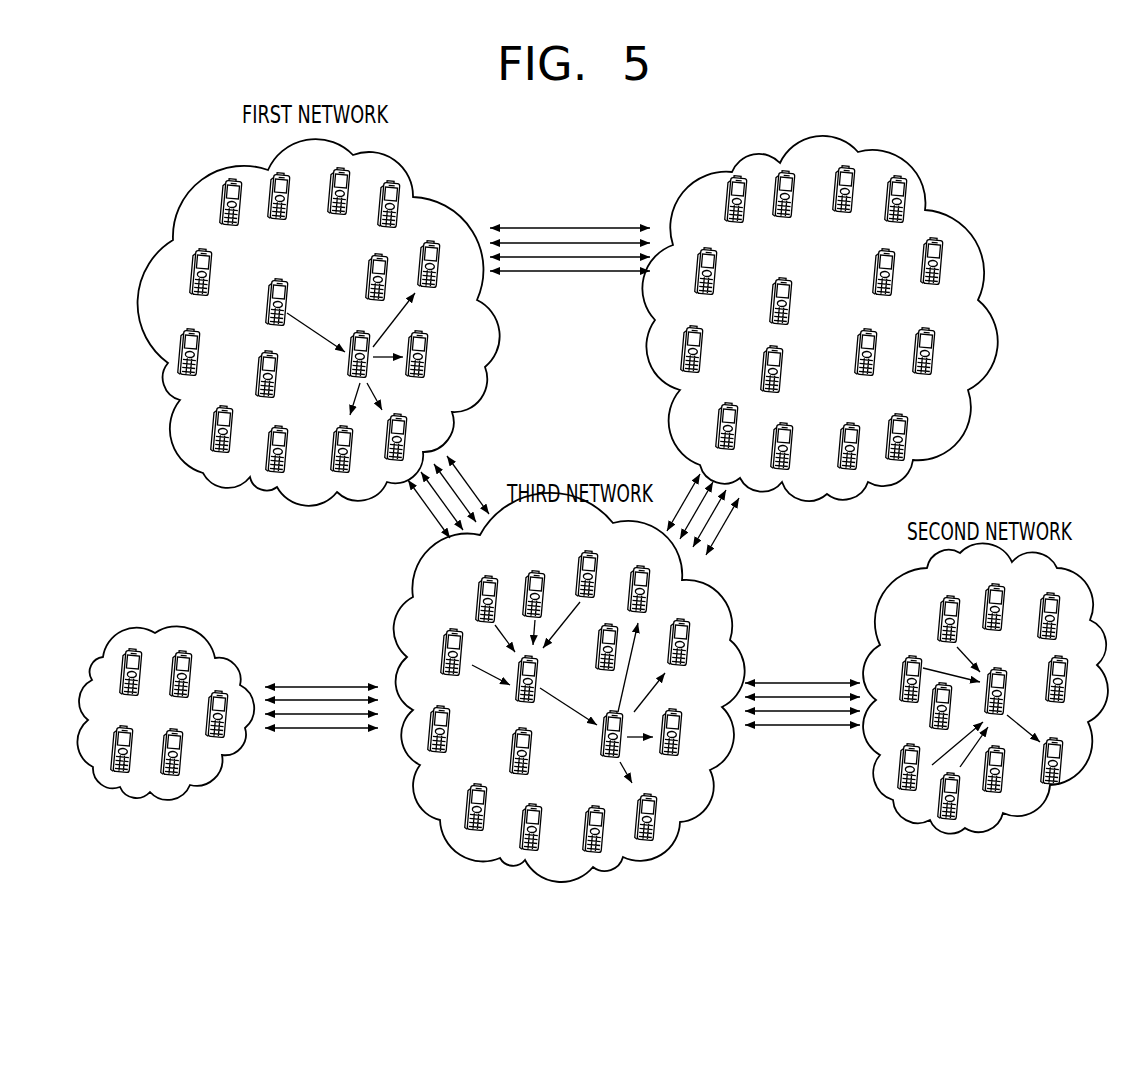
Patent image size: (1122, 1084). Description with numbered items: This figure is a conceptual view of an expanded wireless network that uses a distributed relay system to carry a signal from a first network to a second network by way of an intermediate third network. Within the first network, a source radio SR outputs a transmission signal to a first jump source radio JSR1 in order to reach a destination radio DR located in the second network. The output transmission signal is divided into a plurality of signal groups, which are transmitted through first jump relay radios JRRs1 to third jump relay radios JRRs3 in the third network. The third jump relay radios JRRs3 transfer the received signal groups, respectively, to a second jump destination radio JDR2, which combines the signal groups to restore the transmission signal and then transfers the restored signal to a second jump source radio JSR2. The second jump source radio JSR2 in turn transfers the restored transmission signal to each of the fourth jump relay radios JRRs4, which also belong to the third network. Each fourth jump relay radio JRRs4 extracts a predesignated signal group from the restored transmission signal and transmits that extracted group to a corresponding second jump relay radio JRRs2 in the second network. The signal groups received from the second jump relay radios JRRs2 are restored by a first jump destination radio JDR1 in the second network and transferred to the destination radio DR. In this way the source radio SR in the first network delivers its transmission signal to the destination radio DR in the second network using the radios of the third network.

The source radio SR is at (276, 290).
The first jump source radio JSR1 is at (358, 342).
The first jump relay radios JRRs1 is at (376, 343).
The third jump relay radios JRRs3 is at (518, 602).
The second jump destination radio JDR2 is at (549, 677).
The second jump source radio JSR2 is at (610, 722).
The fourth jump relay radios JRRs4 is at (663, 692).
The second jump relay radios JRRs2 is at (929, 696).
The first jump destination radio JDR1 is at (1003, 680).
The destination radio DR is at (1053, 749).